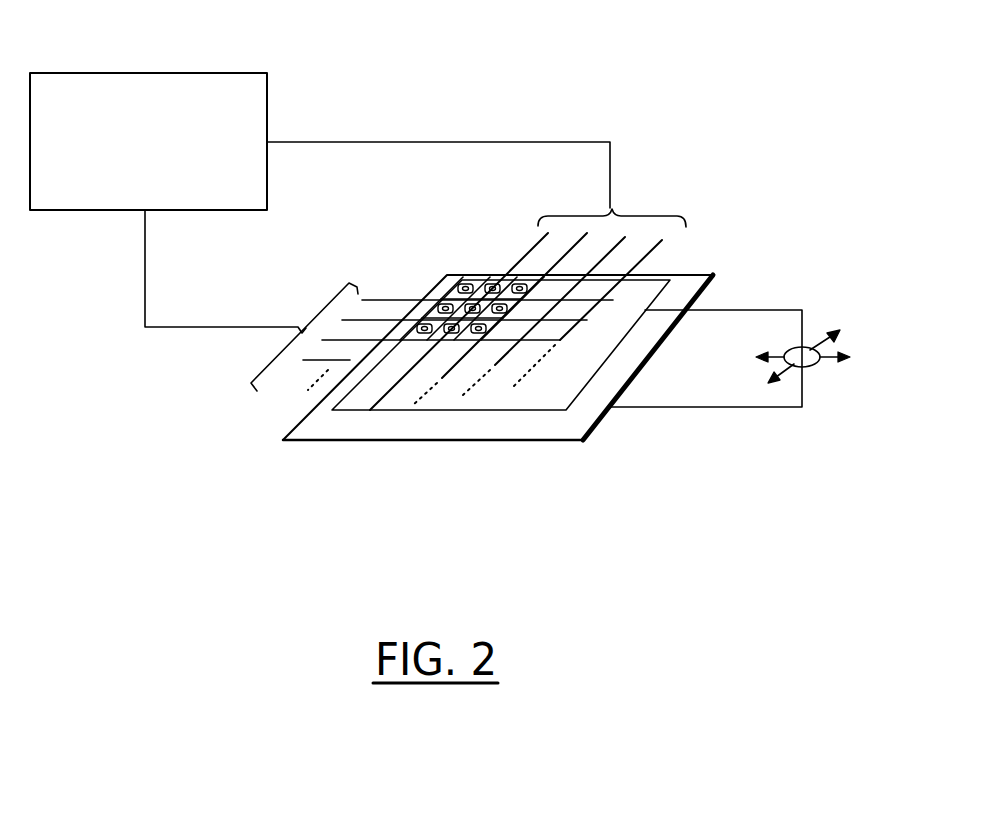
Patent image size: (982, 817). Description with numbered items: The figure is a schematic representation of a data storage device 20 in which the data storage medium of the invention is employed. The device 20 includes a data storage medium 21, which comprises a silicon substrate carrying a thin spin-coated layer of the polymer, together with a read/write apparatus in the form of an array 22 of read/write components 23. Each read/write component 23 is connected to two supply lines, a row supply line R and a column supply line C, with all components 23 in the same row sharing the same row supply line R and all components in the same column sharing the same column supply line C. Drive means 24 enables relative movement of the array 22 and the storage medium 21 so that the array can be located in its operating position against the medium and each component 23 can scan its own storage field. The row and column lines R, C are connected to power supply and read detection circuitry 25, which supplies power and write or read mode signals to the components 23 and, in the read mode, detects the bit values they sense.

The data storage device 20 is at (703, 88).
The data storage medium 21 is at (502, 440).
The array 22 is at (572, 408).
The read/write components 23 is at (500, 278).
The drive means 24 is at (817, 367).
The power supply and read detection circuitry 25 is at (113, 71).
The row supply line R is at (392, 318).
The column supply line C is at (622, 252).